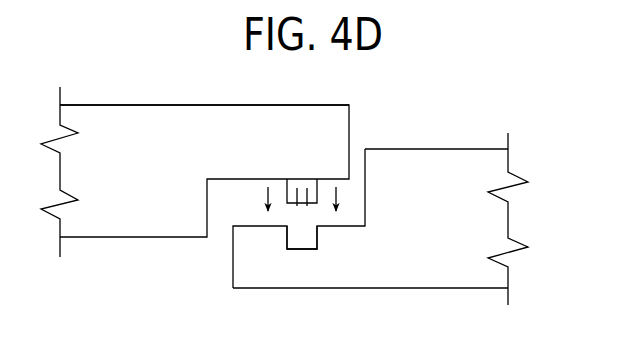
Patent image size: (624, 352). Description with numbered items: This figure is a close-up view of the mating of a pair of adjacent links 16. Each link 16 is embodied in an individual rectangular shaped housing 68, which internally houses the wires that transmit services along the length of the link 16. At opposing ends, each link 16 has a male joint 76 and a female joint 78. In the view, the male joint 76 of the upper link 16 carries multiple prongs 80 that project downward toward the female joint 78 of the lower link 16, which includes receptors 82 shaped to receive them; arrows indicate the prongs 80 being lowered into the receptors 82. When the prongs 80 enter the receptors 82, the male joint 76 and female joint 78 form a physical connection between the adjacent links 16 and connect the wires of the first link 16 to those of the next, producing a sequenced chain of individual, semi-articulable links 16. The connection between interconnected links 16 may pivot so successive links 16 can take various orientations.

The link 16 is at (87, 91).
The rectangular shaped housing 68 is at (142, 115).
The male joint 76 is at (335, 128).
The female joint 78 is at (243, 265).
The prongs 80 is at (296, 185).
The receptors 82 is at (307, 238).